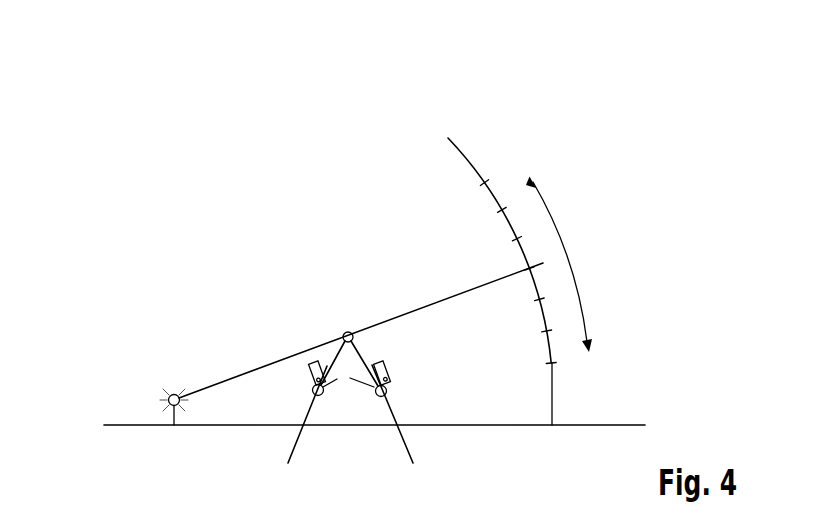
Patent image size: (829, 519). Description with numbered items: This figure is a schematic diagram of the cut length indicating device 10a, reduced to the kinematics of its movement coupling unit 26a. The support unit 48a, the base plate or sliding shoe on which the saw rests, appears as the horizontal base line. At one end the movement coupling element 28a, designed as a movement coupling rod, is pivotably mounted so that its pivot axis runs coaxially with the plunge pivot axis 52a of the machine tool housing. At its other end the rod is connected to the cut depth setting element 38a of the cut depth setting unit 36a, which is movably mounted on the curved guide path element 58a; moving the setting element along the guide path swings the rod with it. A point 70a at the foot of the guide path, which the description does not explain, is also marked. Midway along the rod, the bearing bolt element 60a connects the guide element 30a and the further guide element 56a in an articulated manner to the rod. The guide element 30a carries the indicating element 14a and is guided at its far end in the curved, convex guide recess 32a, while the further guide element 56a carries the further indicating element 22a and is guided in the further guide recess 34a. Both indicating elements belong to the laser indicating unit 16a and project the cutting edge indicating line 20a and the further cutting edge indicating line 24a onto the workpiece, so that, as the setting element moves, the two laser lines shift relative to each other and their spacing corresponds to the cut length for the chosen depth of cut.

The cut length indicating device 10a is at (265, 166).
The indicating element 14a is at (392, 377).
The indicating unit 16a is at (222, 283).
The cutting edge indicating line 20a is at (412, 455).
The further indicating element 22a is at (308, 372).
The further cutting edge indicating line 24a is at (290, 452).
The movement coupling unit 26a is at (157, 310).
The movement coupling element 28a is at (470, 290).
The guide element 30a is at (367, 363).
The guide recess 32a is at (398, 407).
The further guide recess 34a is at (308, 405).
The cut depth setting unit 36a is at (535, 115).
The cut depth setting element 38a is at (537, 257).
The support unit 48a is at (628, 425).
The plunge pivot axis 52a is at (174, 393).
The further guide element 56a is at (327, 362).
The guide path element 58a is at (468, 153).
The bearing bolt element 60a is at (349, 331).
The base point 70a is at (567, 427).